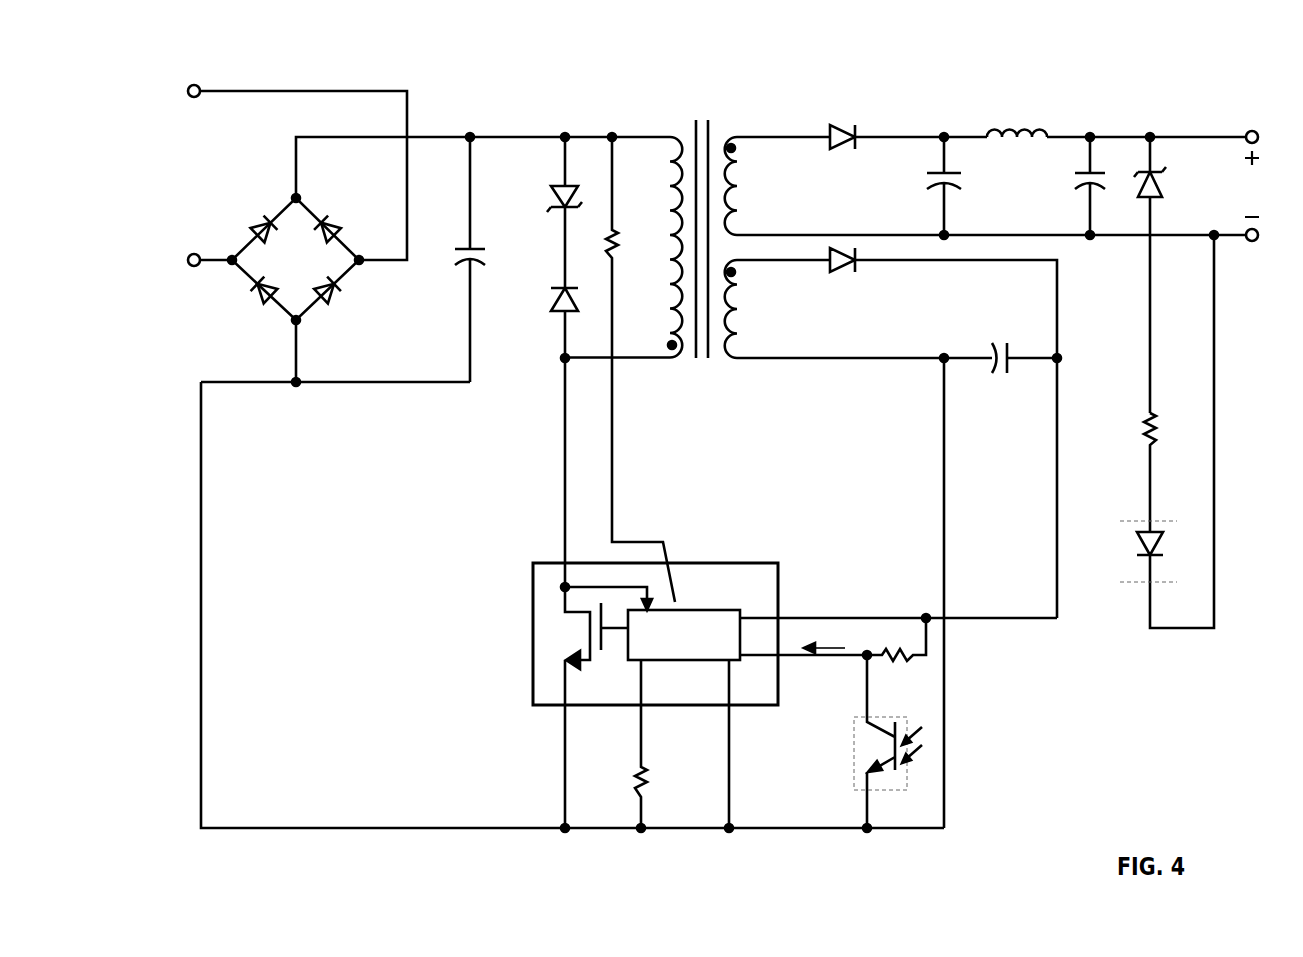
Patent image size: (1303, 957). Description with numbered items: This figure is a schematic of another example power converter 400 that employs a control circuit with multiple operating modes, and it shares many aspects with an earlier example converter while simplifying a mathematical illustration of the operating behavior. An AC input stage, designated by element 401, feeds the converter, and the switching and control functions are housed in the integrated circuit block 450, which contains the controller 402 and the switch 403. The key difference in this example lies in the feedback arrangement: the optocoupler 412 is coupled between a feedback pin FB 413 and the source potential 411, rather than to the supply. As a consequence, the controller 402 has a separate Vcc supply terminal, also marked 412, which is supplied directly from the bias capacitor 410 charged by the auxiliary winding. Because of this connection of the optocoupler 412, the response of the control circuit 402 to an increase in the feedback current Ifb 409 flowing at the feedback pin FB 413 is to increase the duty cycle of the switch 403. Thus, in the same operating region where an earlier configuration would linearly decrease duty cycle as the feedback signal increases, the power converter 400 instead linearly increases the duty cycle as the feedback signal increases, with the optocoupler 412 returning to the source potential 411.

The power converter 400 is at (471, 47).
The AC input / bridge rectifier 401 is at (210, 177).
The controller 402 is at (730, 620).
The switch 403 is at (558, 640).
The feedback current Ifb 409 is at (842, 640).
The bias capacitor 410 is at (1008, 382).
The source potential 411 is at (558, 722).
The optocoupler 412 is at (823, 580).
The feedback pin FB 413 is at (817, 687).
The integrated circuit 450 is at (553, 552).